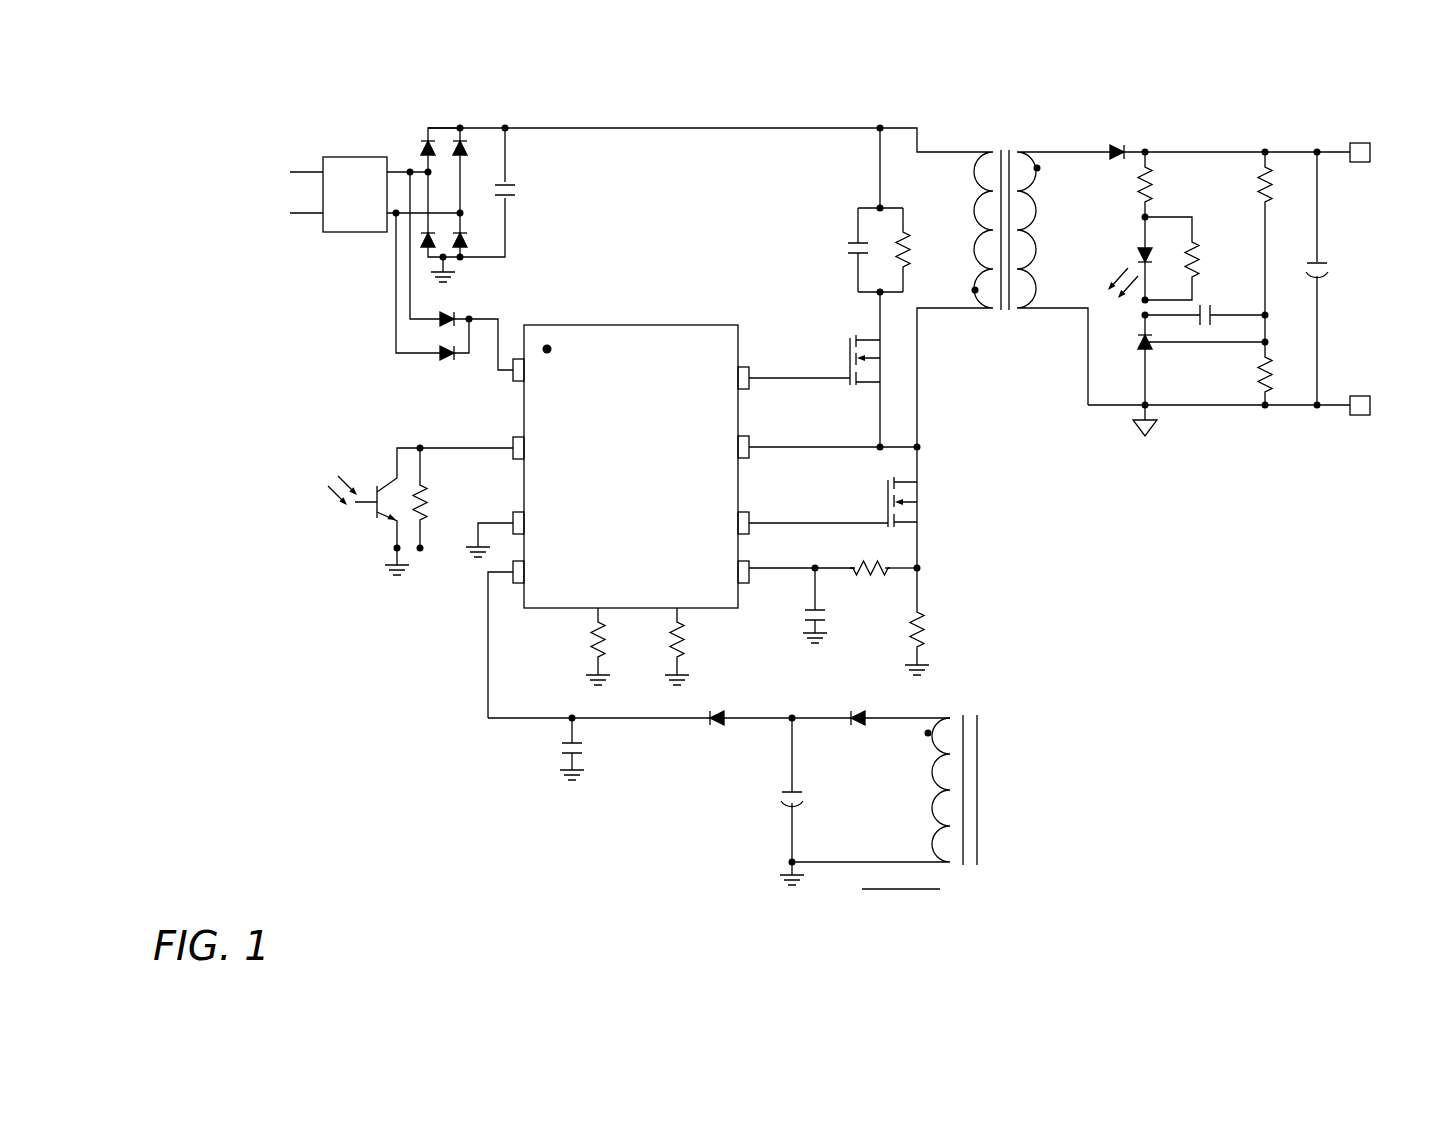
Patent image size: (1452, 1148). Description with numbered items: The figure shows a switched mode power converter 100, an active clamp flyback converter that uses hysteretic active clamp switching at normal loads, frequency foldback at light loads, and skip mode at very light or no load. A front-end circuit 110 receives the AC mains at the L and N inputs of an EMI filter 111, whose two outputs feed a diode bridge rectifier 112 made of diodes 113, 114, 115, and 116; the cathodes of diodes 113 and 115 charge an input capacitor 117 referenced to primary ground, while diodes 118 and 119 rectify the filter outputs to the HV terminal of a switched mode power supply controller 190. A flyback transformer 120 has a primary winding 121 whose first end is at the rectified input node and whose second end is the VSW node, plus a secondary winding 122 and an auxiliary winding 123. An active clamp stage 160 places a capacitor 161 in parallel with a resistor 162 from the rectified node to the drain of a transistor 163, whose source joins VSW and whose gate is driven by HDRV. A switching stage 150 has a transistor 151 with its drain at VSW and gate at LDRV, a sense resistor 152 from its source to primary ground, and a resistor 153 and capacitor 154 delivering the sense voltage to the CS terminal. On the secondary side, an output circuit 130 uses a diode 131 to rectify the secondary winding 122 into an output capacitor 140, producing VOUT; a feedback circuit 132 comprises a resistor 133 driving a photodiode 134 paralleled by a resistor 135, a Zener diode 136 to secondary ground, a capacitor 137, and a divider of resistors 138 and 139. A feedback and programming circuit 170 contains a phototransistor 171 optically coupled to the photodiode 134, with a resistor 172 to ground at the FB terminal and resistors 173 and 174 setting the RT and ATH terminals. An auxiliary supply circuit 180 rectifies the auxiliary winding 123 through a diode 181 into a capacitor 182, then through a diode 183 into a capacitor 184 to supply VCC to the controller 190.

The switched mode power converter 100 is at (312, 750).
The front-end circuit 110 is at (306, 120).
The electromagnetic interference (EMI) filter 111 is at (366, 157).
The diode bridge rectifier 112 is at (443, 108).
The diode 113 is at (421, 146).
The diode 114 is at (423, 241).
The diode 115 is at (467, 149).
The diode 116 is at (480, 230).
The input capacitor 117 is at (497, 195).
The diode 118 is at (456, 316).
The diode 119 is at (442, 358).
The flyback transformer 120 is at (981, 115).
The primary winding 121 is at (955, 310).
The secondary winding 122 is at (1033, 310).
The auxiliary winding 123 is at (948, 860).
The output circuit 130 is at (1071, 133).
The diode 131 is at (1122, 145).
The feedback circuit 132 is at (1204, 133).
The resistor 133 is at (1135, 176).
The photodiode 134 is at (1141, 251).
The resistor 135 is at (1198, 240).
The Zener diode 136 is at (1141, 344).
The capacitor 137 is at (1203, 322).
The resistor 138 is at (1277, 203).
The resistor 139 is at (1277, 361).
The output capacitor 140 is at (1335, 280).
The switching stage 150 is at (969, 491).
The transistor 151 is at (905, 483).
The resistor 152 is at (925, 612).
The resistor 153 is at (855, 565).
The capacitor 154 is at (802, 624).
The active clamp stage 160 is at (841, 193).
The capacitor 161 is at (850, 260).
The resistor 162 is at (908, 250).
The transistor 163 is at (872, 334).
The feedback and programming circuit 170 is at (318, 483).
The phototransistor 171 is at (385, 514).
The resistor 172 is at (428, 514).
The resistor 173 is at (573, 647).
The resistor 174 is at (657, 648).
The auxiliary supply circuit 180 is at (594, 810).
The diode 181 is at (862, 713).
The capacitor 182 is at (780, 792).
The diode 183 is at (722, 712).
The capacitor 184 is at (556, 740).
The switched mode power supply controller 190 is at (587, 325).